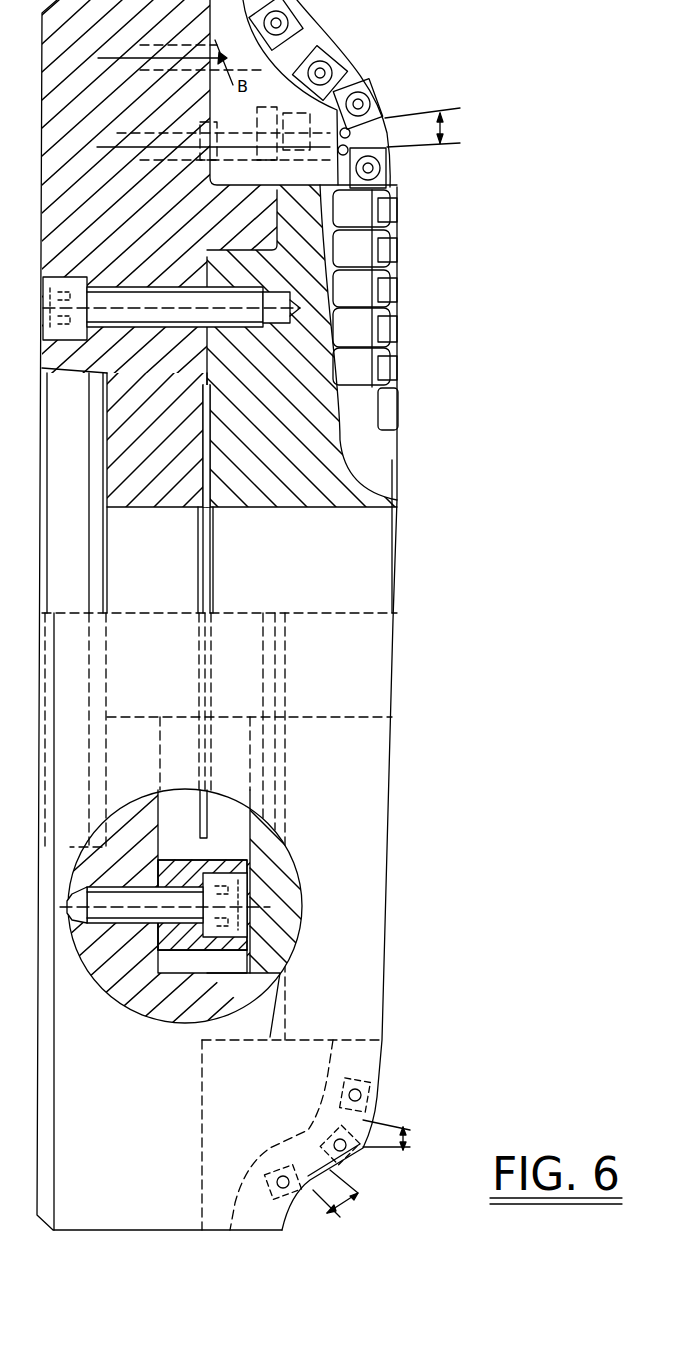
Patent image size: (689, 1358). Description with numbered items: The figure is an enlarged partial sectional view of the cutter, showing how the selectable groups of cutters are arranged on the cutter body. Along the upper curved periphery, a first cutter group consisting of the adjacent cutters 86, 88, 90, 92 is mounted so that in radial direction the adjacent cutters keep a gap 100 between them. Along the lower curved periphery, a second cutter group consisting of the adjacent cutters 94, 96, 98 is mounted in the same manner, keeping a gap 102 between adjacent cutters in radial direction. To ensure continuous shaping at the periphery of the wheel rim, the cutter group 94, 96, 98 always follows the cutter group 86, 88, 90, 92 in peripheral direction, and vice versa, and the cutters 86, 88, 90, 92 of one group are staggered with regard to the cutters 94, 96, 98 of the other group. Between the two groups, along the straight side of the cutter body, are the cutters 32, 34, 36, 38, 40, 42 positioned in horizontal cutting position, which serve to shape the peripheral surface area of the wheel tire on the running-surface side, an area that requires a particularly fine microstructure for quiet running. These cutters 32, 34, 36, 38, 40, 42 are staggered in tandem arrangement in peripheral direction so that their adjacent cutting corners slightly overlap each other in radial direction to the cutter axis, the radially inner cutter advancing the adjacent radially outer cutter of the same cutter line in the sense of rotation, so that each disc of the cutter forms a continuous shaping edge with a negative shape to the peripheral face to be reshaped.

The cutter 32 is at (395, 205).
The cutter 34 is at (392, 248).
The cutter 36 is at (390, 287).
The cutter 38 is at (392, 328).
The cutter 40 is at (395, 368).
The cutter 42 is at (395, 410).
The cutter 86 is at (297, 12).
The cutter 88 is at (336, 58).
The cutter 90 is at (376, 98).
The cutter 92 is at (385, 163).
The cutter 94 is at (290, 1207).
The cutter 96 is at (350, 1154).
The cutter 98 is at (362, 1090).
The gap 100 is at (447, 127).
The gap 102 is at (362, 1226).